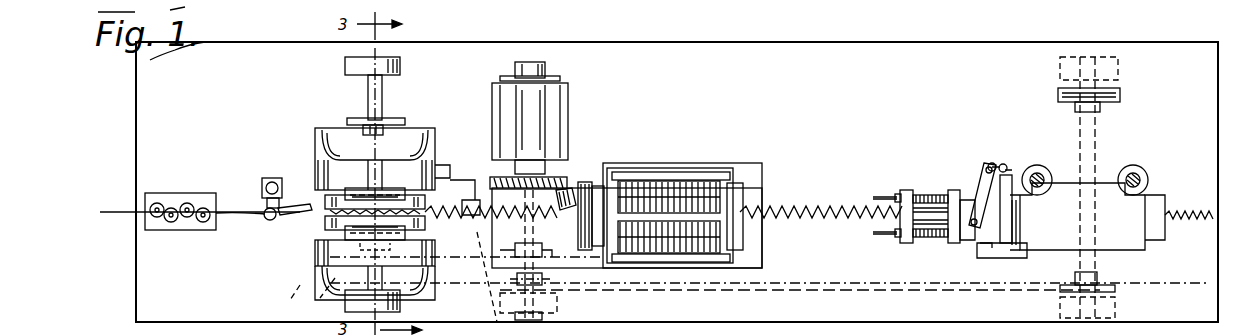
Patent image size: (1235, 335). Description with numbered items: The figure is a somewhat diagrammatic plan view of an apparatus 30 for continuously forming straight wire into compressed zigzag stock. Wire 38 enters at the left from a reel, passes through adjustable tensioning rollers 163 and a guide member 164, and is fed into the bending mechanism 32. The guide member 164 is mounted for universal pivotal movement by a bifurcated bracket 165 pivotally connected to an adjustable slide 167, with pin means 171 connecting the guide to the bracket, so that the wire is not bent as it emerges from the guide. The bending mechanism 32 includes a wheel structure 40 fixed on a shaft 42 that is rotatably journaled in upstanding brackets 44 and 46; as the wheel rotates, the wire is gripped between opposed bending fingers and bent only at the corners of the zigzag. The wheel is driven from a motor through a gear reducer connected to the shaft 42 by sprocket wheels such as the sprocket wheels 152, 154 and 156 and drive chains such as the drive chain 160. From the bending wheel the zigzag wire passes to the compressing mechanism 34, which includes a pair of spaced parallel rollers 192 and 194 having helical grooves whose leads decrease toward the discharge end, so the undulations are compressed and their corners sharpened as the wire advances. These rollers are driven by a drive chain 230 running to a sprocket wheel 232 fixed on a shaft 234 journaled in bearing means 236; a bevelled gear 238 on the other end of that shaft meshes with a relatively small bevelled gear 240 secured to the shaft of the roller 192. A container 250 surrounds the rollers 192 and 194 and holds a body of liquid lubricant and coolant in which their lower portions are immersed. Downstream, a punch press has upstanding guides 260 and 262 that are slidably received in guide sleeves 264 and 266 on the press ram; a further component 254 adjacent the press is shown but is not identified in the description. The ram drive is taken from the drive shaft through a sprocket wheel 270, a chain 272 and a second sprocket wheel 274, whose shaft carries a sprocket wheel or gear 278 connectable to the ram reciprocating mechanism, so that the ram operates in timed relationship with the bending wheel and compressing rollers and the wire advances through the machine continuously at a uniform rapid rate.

The apparatus 30 is at (1120, 43).
The bending mechanism 32 is at (388, 184).
The compressing mechanism 34 is at (752, 162).
The wire 38 is at (107, 212).
The wheel structure 40 is at (320, 235).
The shaft 42 is at (384, 104).
The upstanding bracket 44 is at (315, 165).
The upstanding bracket 46 is at (335, 262).
The sprocket wheel 152 is at (512, 250).
The sprocket wheel 154 is at (318, 292).
The sprocket wheel 156 is at (355, 122).
The drive chain 160 is at (497, 322).
The adjustable tensioning rollers 163 is at (157, 203).
The guide member 164 is at (292, 205).
The bifurcated bracket 165 is at (265, 210).
The adjustable slide 167 is at (262, 184).
The pin means 171 is at (272, 220).
The roller 192 is at (675, 178).
The roller 194 is at (664, 256).
The drive chain 230 is at (627, 139).
The sprocket wheel 232 is at (555, 76).
The shaft 234 is at (563, 176).
The bearing means 236 is at (555, 108).
The bevelled gear 238 is at (572, 192).
The small bevelled gear 240 is at (650, 150).
The container 250 is at (708, 172).
The air cylinder 254 is at (923, 188).
The upstanding guide 260 is at (1134, 172).
The upstanding guide 262 is at (1037, 172).
The guide sleeve 264 is at (1150, 178).
The guide sleeve 266 is at (1000, 172).
The sprocket wheel 270 is at (560, 290).
The chain 272 is at (972, 290).
The second sprocket wheel 274 is at (1115, 288).
The sprocket wheel or gear 278 is at (1110, 95).